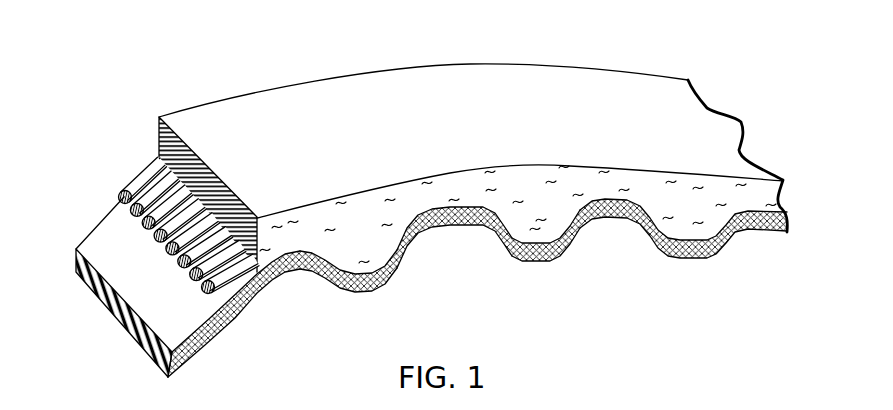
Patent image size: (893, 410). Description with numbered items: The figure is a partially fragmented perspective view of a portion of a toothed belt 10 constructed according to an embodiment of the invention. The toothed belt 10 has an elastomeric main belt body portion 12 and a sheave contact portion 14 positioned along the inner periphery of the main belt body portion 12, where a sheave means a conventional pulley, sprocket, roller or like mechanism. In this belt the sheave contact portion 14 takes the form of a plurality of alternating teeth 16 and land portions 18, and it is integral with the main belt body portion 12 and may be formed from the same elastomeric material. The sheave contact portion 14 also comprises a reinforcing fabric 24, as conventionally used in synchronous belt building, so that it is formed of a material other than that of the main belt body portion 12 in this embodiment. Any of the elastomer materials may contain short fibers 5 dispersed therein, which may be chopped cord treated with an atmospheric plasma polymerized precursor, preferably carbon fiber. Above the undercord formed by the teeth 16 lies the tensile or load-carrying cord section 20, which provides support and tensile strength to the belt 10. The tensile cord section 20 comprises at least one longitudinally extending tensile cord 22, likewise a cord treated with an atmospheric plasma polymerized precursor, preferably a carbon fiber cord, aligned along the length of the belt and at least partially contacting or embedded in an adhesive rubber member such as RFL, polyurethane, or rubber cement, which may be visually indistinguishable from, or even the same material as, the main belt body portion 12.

The toothed belt 10 is at (412, 198).
The elastomeric main belt body portion 12 is at (526, 96).
The sheave contact portion 14 is at (477, 288).
The teeth 16 is at (365, 253).
The land portions 18 is at (442, 229).
The tensile cord section 20 is at (148, 218).
The tensile cord 22 is at (158, 236).
The reinforcing fabric 24 is at (543, 260).
The short fibers 5 is at (351, 249).